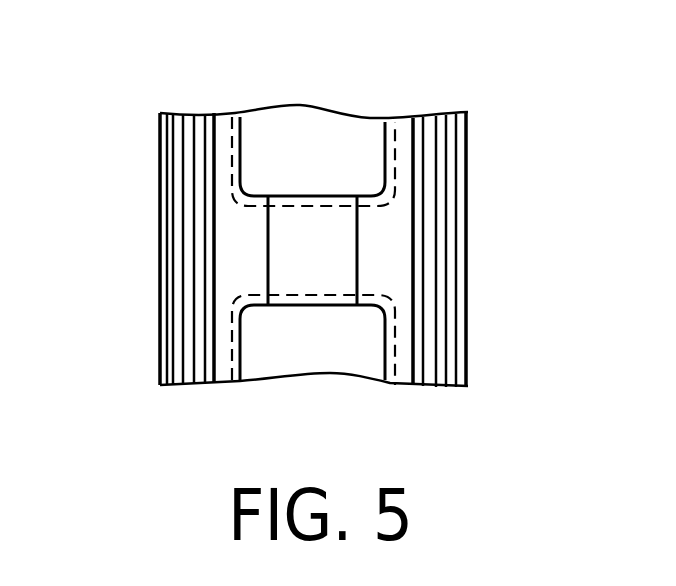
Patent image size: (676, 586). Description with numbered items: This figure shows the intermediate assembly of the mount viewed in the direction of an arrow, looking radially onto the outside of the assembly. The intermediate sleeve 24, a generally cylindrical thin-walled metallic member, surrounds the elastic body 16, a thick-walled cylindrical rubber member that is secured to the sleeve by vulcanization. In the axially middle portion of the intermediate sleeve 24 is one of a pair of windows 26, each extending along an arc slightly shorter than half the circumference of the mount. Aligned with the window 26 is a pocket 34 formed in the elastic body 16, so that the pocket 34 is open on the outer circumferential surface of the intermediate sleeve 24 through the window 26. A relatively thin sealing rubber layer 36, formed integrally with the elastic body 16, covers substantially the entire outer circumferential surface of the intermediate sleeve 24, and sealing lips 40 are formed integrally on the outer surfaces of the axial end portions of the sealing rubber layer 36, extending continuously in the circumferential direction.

The elastic body 16 is at (372, 243).
The intermediate sleeve 24 is at (165, 362).
The window 26 is at (383, 156).
The pocket 34 is at (240, 144).
The sealing rubber layer 36 is at (450, 363).
The sealing lip 40 is at (185, 131).